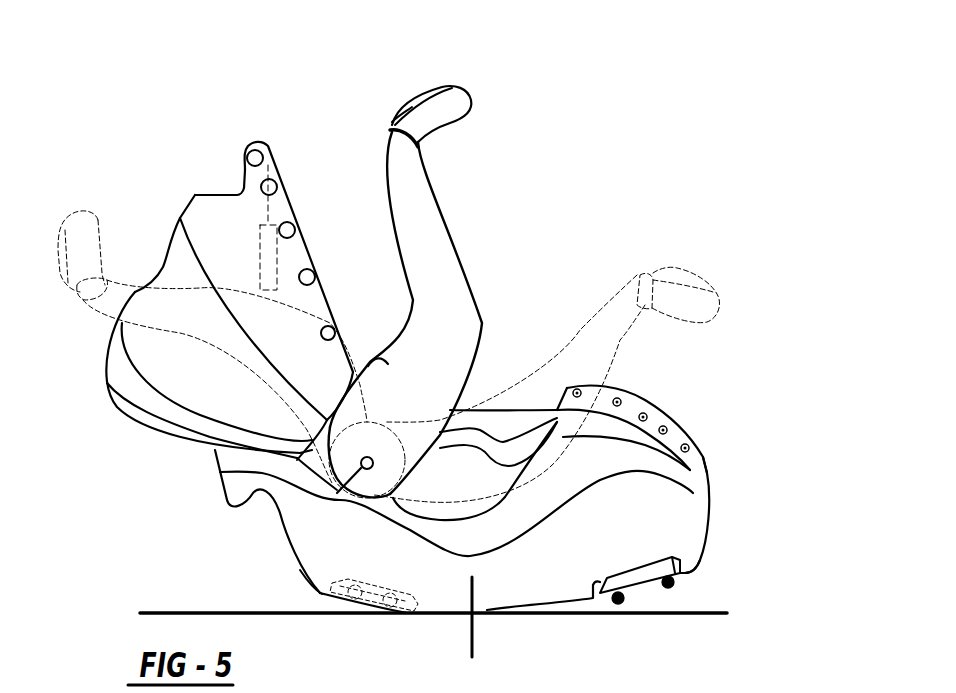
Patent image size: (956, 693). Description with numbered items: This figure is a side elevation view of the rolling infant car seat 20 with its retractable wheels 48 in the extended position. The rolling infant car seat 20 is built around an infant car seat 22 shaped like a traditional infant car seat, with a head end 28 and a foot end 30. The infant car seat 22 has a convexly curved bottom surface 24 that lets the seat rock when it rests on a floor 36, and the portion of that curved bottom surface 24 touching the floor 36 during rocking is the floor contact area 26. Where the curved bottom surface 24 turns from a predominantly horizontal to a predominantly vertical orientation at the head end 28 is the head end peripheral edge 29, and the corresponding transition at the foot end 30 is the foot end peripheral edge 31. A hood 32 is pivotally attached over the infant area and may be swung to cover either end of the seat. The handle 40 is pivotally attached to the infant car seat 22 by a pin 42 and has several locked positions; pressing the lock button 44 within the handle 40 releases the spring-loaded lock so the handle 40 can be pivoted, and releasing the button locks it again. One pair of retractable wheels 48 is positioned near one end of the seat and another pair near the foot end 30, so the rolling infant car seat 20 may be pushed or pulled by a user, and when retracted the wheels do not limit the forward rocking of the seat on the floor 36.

The rolling infant car seat 20 is at (731, 477).
The infant car seat 22 is at (353, 571).
The convexly curved bottom surface 24 is at (568, 613).
The floor contact area 26 is at (486, 601).
The head end 28 is at (280, 527).
The head end peripheral edge 29 is at (320, 593).
The foot end 30 is at (708, 518).
The foot end peripheral edge 31 is at (690, 572).
The hood 32 is at (195, 193).
The floor 36 is at (272, 615).
The handle 40 is at (102, 317).
The pin 42 is at (222, 472).
The lock button 44 is at (382, 355).
The retractable wheels 48 is at (675, 582).